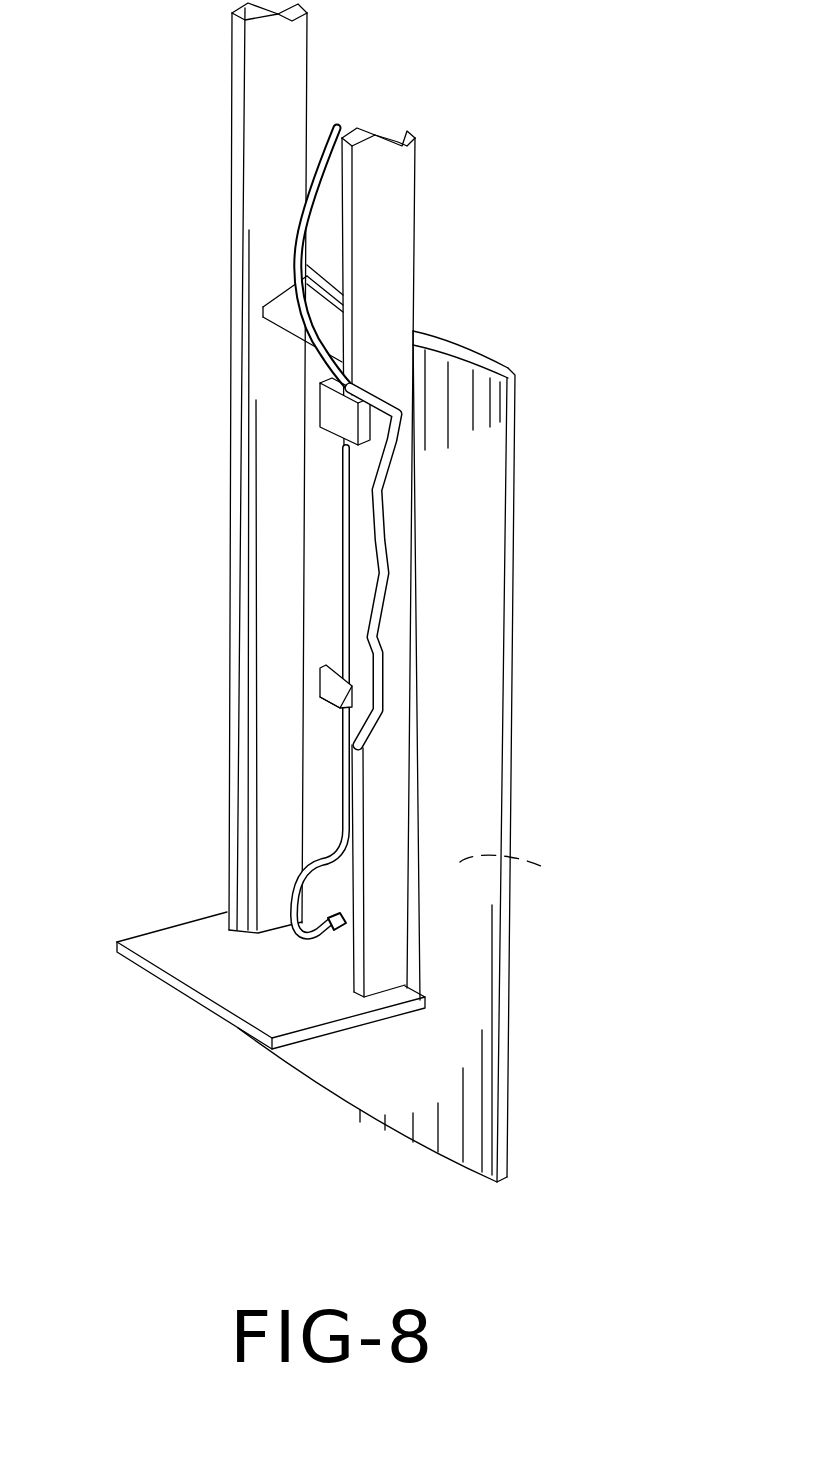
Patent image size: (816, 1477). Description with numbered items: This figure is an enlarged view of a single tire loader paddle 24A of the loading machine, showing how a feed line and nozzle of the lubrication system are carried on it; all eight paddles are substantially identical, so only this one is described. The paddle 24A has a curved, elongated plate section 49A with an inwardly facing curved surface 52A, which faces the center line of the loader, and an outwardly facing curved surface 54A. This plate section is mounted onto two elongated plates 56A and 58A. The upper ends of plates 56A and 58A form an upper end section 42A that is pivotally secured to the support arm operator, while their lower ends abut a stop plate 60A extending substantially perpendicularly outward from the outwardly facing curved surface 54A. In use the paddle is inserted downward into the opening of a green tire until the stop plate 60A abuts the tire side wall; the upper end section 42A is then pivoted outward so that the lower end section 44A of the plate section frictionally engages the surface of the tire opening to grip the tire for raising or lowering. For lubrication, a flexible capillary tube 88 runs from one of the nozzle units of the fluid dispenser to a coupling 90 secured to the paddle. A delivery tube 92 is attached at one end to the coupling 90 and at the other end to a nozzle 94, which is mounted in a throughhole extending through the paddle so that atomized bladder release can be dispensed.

The tire loader paddle 24A is at (597, 351).
The upper end section 42A is at (470, 272).
The lower end section 44A is at (528, 1073).
The curved elongated plate section 49A is at (478, 528).
The inwardly facing curved surface 52A is at (560, 873).
The outwardly facing curved surface 54A is at (478, 455).
The elongated plate 56A is at (397, 600).
The elongated plate 58A is at (283, 600).
The stop plate 60A is at (172, 940).
The flexible capillary tube 88 is at (305, 230).
The coupling 90 is at (330, 405).
The delivery tube 92 is at (325, 850).
The nozzle 94 is at (347, 920).